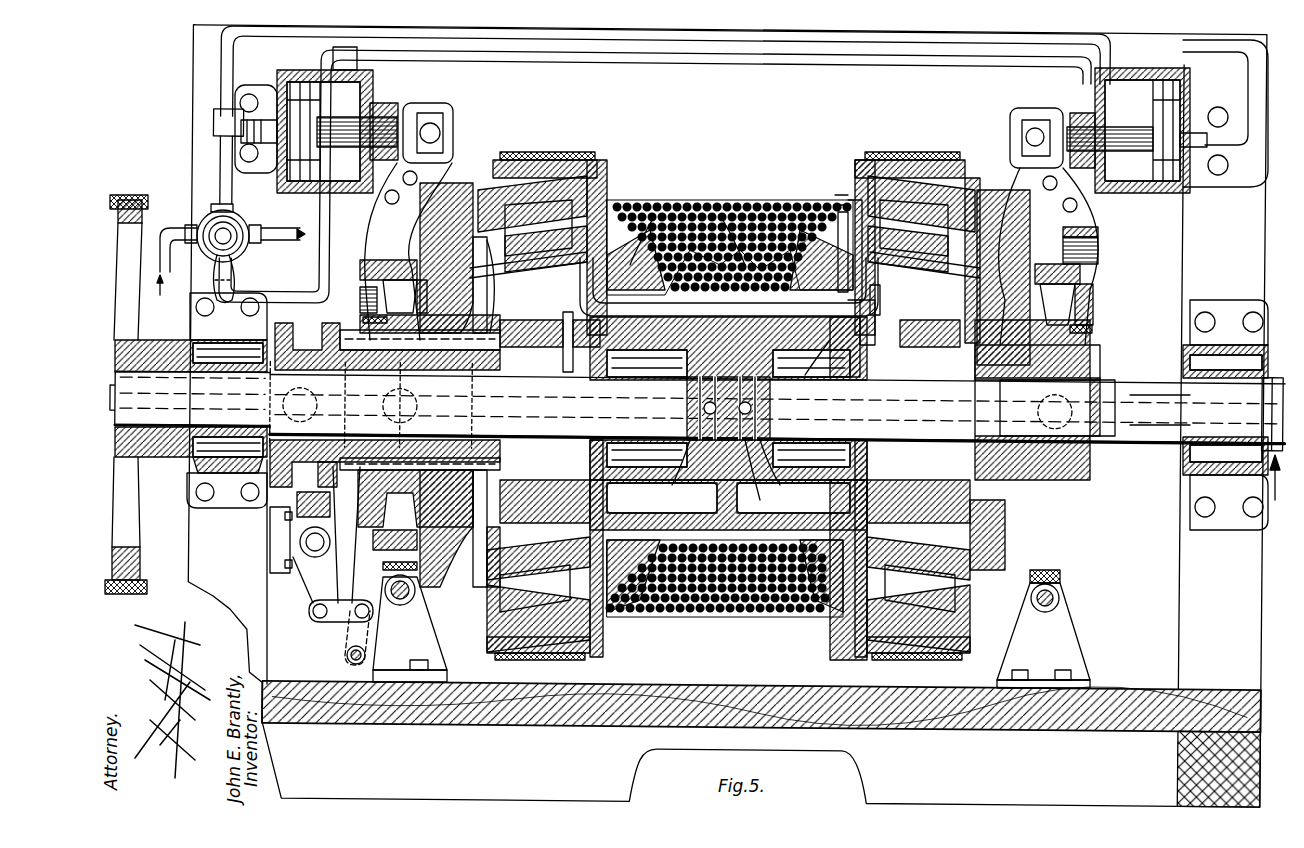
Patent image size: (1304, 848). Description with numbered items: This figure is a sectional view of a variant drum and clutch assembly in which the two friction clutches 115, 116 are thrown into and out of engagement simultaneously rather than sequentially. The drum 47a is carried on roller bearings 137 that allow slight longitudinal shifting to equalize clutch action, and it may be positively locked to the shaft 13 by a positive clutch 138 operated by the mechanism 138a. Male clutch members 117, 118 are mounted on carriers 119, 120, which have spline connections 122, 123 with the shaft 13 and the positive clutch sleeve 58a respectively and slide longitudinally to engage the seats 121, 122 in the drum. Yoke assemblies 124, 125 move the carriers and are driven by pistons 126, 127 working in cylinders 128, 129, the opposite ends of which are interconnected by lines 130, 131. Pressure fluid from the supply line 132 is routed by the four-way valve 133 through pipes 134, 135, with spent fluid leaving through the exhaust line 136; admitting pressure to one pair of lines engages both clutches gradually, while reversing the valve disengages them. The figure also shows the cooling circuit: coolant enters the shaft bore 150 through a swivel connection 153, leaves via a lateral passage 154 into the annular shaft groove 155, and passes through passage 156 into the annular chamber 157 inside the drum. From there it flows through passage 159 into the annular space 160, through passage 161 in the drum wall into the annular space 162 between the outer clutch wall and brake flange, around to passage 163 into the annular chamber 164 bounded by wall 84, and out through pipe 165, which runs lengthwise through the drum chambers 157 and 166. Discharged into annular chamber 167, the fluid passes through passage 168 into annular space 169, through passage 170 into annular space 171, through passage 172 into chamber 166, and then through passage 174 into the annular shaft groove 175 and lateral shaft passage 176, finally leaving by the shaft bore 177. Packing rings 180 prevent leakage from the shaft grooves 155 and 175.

The shaft 13 is at (1150, 392).
The drum 47a is at (610, 177).
The positive clutch sleeve 58a is at (570, 305).
The wall 84 is at (930, 268).
The friction clutch 115 is at (979, 180).
The friction clutch 116 is at (479, 177).
The male clutch member 117 is at (995, 178).
The male clutch member 118 is at (475, 200).
The carrier 119 is at (1005, 260).
The carrier 120 is at (455, 255).
The seat 121 is at (930, 200).
The seat 122 is at (540, 185).
The spline connection 123 is at (355, 328).
The yoke assembly 124 is at (1090, 262).
The yoke assembly 125 is at (388, 248).
The piston 126 is at (1145, 185).
The piston 127 is at (318, 75).
The cylinder 128 is at (1142, 80).
The cylinder 129 is at (298, 180).
The line 130 is at (705, 40).
The line 131 is at (745, 55).
The supply line 132 is at (173, 240).
The four-way valve 133 is at (209, 203).
The pipe 134 is at (213, 150).
The pipe 135 is at (322, 222).
The exhaust line 136 is at (290, 240).
The roller bearings 137 is at (850, 345).
The positive clutch 138 is at (574, 322).
The operating mechanism 138a is at (341, 627).
The shaft bore 150 is at (1140, 425).
The swivel connection 153 is at (1270, 475).
The lateral passage 154 is at (765, 388).
The annular shaft groove 155 is at (740, 475).
The passage 156 is at (875, 322).
The annular chamber 157 is at (880, 310).
The passage 159 is at (878, 295).
The annular space 160 is at (845, 225).
The passage 161 is at (840, 200).
The annular space 162 is at (900, 175).
The passage 163 is at (865, 620).
The annular chamber 164 is at (928, 282).
The pipe 165 is at (575, 285).
The chamber 166 is at (712, 215).
The annular chamber 167 is at (535, 268).
The passage 168 is at (570, 600).
The annular space 169 is at (580, 190).
The passage 170 is at (615, 192).
The annular space 171 is at (660, 220).
The passage 172 is at (705, 200).
The passage 174 is at (738, 225).
The annular shaft groove 175 is at (705, 480).
The lateral shaft passage 176 is at (700, 395).
The shaft bore 177 is at (578, 405).
The packing rings 180 is at (772, 505).